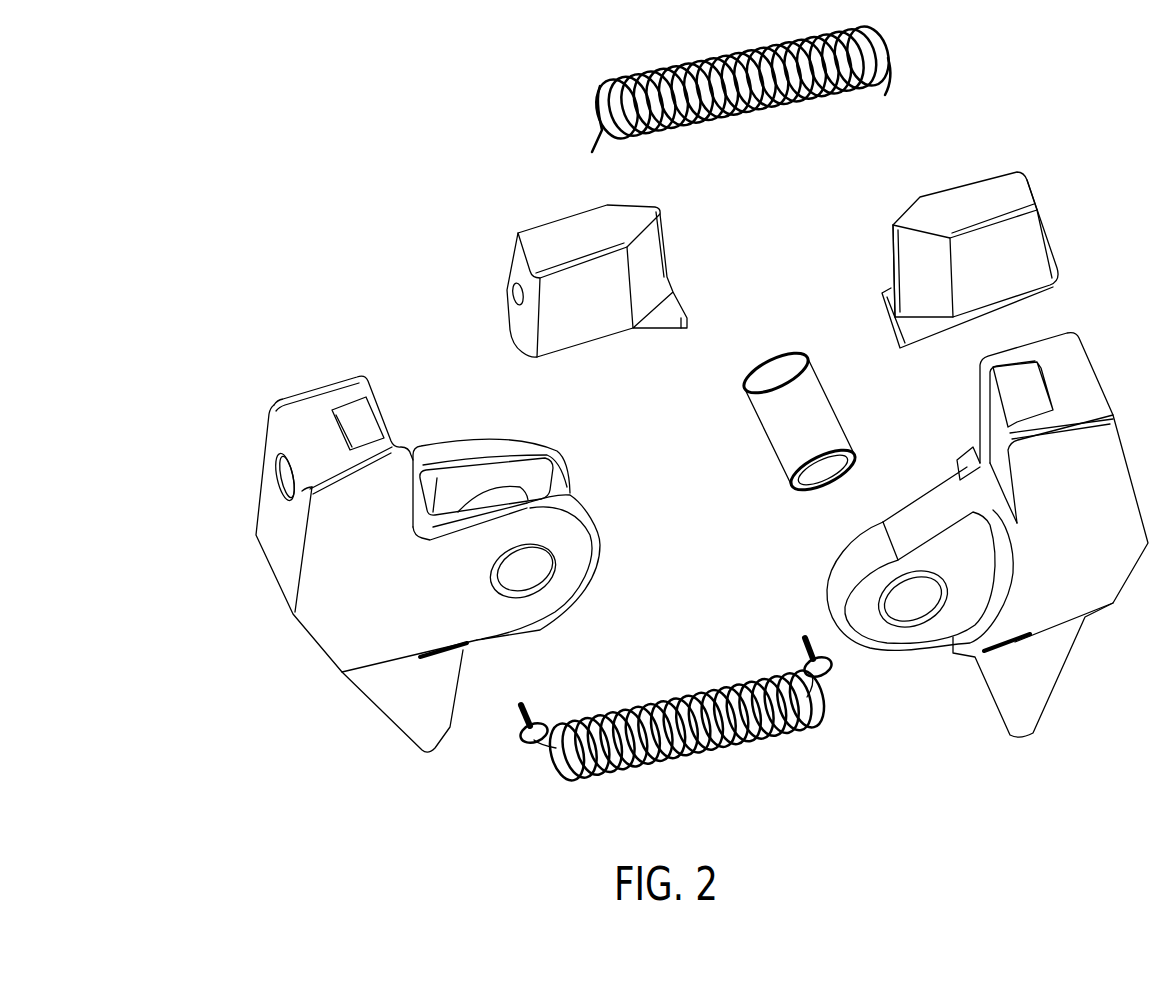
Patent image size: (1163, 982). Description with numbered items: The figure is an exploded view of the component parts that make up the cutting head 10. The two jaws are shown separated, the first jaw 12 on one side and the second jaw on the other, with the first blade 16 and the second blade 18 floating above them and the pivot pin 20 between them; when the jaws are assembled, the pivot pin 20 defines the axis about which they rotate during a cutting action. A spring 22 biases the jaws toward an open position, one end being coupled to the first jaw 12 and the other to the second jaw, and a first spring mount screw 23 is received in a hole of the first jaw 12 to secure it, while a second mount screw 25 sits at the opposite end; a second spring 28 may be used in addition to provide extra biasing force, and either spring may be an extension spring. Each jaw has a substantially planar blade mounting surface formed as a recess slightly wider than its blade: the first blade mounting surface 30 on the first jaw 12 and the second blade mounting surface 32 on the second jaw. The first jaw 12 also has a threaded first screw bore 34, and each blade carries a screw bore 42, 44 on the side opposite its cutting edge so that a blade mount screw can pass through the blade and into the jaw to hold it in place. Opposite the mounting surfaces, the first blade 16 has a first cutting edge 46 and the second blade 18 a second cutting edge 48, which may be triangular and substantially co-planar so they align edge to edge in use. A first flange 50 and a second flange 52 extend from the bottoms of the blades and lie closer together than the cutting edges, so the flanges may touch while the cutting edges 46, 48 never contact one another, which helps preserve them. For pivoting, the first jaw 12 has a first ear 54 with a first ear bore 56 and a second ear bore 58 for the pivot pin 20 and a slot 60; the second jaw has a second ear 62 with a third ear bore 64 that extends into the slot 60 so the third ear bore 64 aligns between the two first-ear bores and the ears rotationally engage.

The cutting head 10 is at (250, 106).
The first jaw 12 is at (268, 523).
The first blade 16 is at (565, 240).
The second blade 18 is at (968, 207).
The pivot pin 20 is at (775, 432).
The spring 22 is at (700, 760).
The first spring mount screw 23 is at (538, 745).
The second spring end 25 is at (828, 680).
The second spring 28 is at (598, 85).
The first blade mounting surface 30 is at (360, 428).
The second blade mounting surface 32 is at (1025, 392).
The first screw bore 34 is at (279, 468).
The screw bore 42 is at (507, 291).
The screw bore 44 is at (1028, 188).
The first cutting edge 46 is at (663, 242).
The second cutting edge 48 is at (892, 255).
The first flange 50 is at (670, 313).
The second flange 52 is at (885, 300).
The first ear 54 is at (508, 445).
The first ear bore 56 is at (487, 493).
The second ear bore 58 is at (520, 570).
The slot 60 is at (550, 480).
The second ear 62 is at (925, 517).
The third ear bore 64 is at (912, 603).